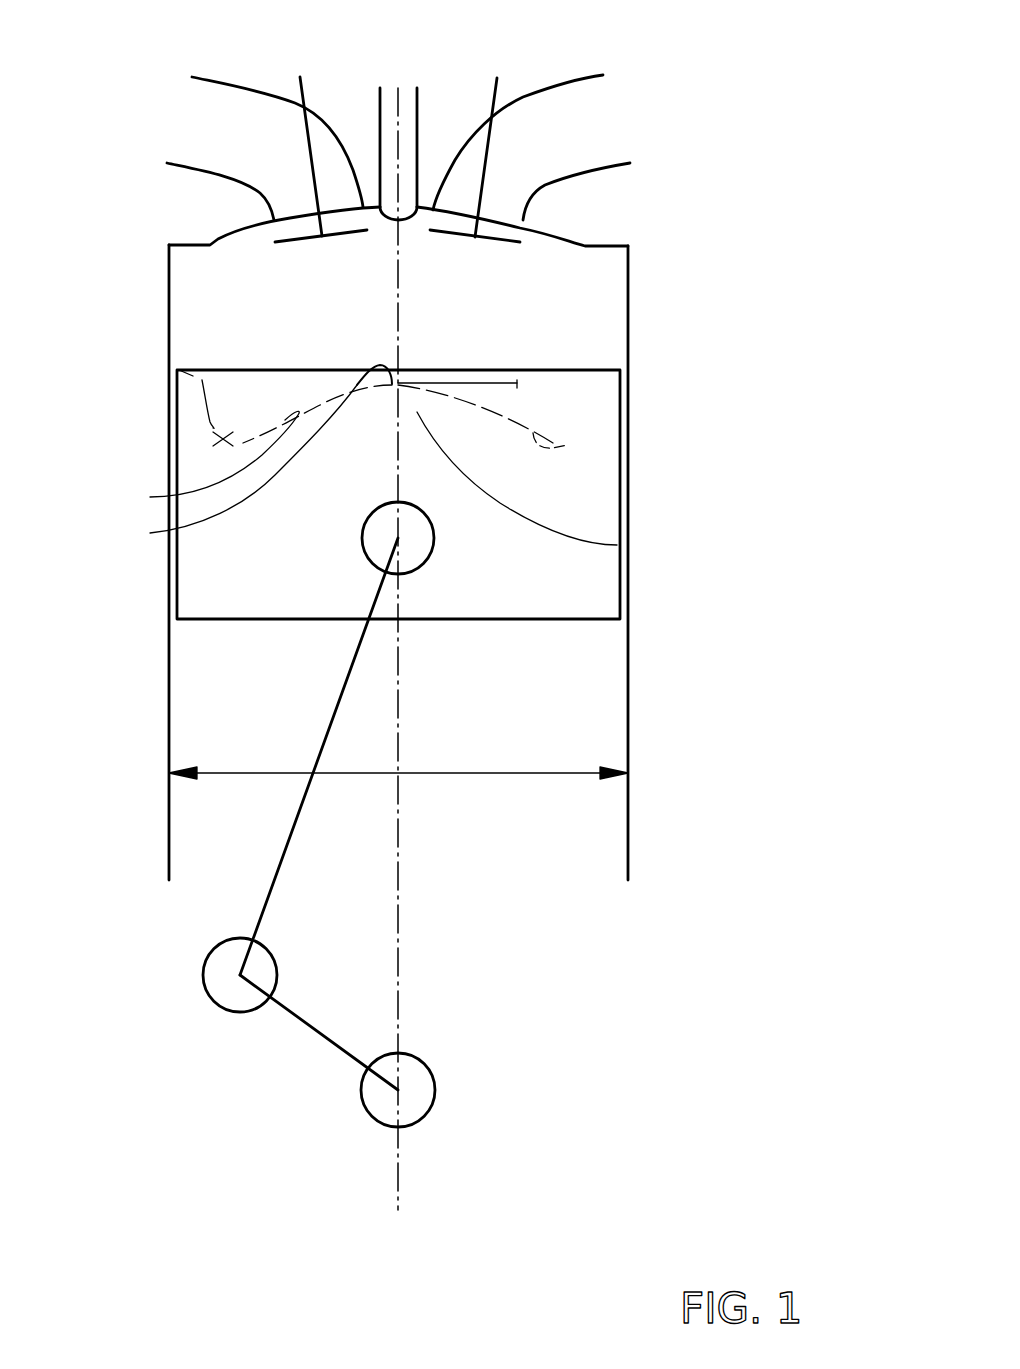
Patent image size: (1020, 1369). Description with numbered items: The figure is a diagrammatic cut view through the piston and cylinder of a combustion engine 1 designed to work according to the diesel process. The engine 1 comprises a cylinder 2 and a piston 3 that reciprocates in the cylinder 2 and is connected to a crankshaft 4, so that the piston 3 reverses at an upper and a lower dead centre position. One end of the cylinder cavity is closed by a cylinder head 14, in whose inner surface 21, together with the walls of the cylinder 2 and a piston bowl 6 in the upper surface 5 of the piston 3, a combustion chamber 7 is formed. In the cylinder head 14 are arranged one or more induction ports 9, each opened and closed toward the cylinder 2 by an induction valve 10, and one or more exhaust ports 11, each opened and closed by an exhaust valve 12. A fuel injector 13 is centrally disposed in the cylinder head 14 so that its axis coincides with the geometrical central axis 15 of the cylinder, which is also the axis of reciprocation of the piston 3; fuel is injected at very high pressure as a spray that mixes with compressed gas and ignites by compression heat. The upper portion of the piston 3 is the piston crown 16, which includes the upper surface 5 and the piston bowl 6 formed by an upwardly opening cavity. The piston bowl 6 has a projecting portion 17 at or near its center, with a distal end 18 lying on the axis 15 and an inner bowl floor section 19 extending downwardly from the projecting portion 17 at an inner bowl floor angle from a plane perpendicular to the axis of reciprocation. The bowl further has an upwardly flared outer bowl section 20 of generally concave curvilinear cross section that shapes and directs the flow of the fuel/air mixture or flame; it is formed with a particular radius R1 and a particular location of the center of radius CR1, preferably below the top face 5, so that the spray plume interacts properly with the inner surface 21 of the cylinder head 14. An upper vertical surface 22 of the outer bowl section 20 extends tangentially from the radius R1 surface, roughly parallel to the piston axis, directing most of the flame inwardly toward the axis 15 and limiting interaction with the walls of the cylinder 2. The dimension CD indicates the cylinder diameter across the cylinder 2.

The combustion engine 1 is at (557, 58).
The cylinder 2 is at (607, 265).
The piston 3 is at (607, 501).
The crankshaft 4 is at (435, 1082).
The upper surface 5 is at (555, 370).
The piston bowl 6 is at (570, 440).
The combustion chamber 7 is at (243, 425).
The induction port 9 is at (583, 77).
The induction valve 10 is at (497, 243).
The exhaust port 11 is at (220, 78).
The exhaust valve 12 is at (290, 243).
The fuel injector 13 is at (390, 219).
The cylinder head 14 is at (236, 229).
The geometrical central axis 15 is at (400, 1012).
The piston crown 16 is at (613, 392).
The projecting portion 17 is at (617, 545).
The distal end 18 is at (150, 533).
The inner bowl floor section 19 is at (150, 497).
The outer bowl section 20 is at (213, 428).
The inner surface 21 is at (220, 242).
The upper vertical surface 22 is at (585, 432).
The cylinder diameter CD is at (570, 772).
The center of radius CR1 is at (568, 438).
The radius R1 is at (552, 417).